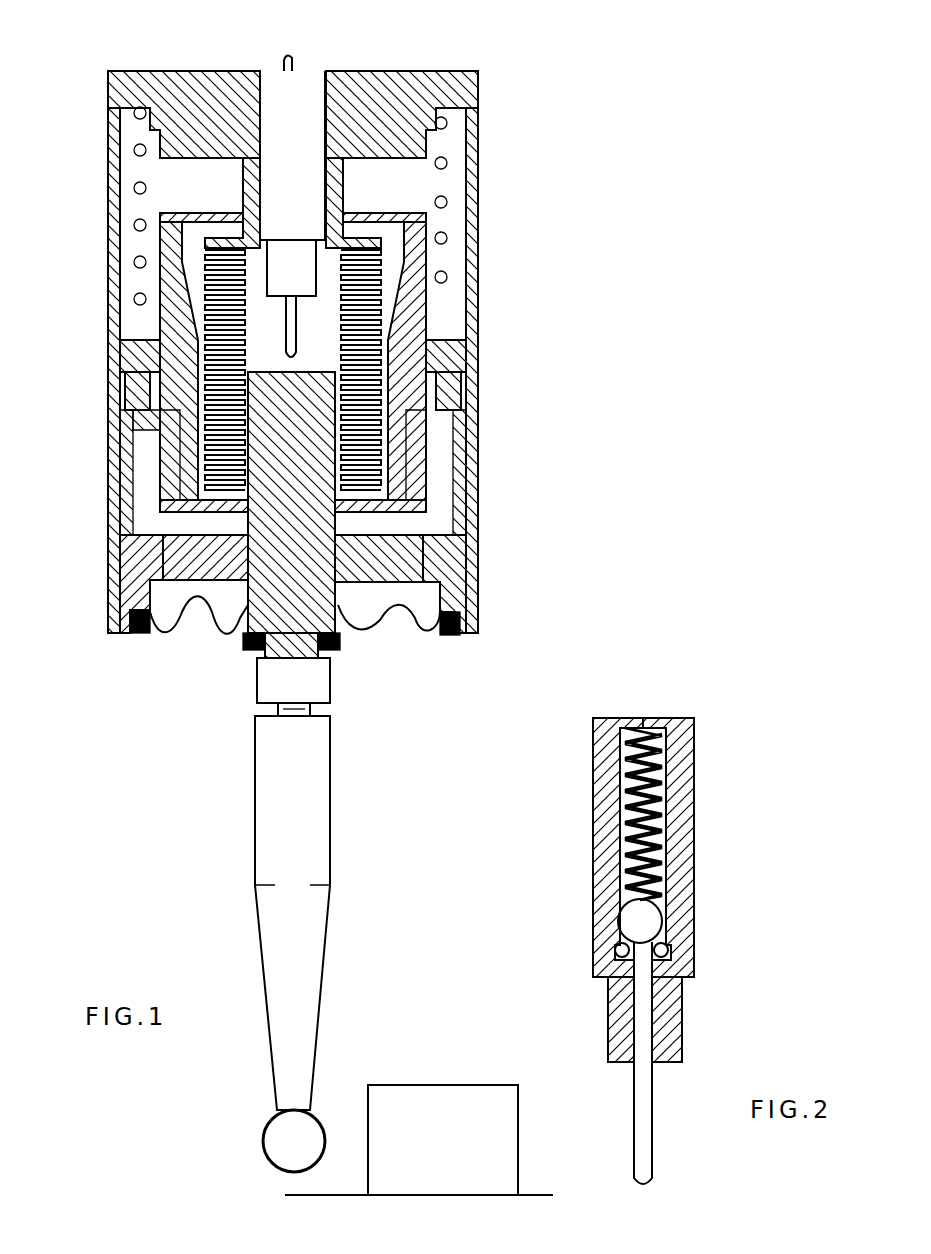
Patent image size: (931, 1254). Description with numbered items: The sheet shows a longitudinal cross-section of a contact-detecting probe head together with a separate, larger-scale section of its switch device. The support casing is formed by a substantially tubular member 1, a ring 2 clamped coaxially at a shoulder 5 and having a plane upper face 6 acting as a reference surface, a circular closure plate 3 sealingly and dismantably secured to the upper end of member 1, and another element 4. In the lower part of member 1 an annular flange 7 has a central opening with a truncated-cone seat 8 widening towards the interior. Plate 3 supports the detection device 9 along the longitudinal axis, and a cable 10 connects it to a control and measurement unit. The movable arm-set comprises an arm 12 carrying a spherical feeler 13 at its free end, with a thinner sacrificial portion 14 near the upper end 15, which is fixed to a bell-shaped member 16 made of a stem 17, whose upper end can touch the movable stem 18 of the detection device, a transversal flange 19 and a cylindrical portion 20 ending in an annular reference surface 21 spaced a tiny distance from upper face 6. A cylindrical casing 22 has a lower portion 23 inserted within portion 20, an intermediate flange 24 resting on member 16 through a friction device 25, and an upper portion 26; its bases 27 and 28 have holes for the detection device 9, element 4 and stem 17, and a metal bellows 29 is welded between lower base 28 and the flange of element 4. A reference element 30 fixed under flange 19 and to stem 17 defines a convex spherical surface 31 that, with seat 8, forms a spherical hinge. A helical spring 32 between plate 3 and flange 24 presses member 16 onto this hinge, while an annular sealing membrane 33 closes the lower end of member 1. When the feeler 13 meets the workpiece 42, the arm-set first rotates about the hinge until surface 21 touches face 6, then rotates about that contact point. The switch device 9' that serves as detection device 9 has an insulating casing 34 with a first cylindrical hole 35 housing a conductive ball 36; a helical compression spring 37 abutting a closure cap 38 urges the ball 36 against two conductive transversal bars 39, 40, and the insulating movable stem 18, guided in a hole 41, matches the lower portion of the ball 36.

In FIG. 1, the member 1 is at (112, 505).
In FIG. 1, the ring 2 is at (125, 395).
In FIG. 1, the closure plate 3 is at (145, 71).
In FIG. 1, the element 4 is at (243, 175).
In FIG. 1, the shoulder 5 is at (135, 420).
In FIG. 1, the upper face 6 is at (120, 352).
In FIG. 1, the flange 7 is at (165, 565).
In FIG. 1, the reference surface or seat 8 is at (145, 633).
In FIG. 1, the detection device 9 is at (295, 156).
In FIG. 2, the switch device 9' is at (593, 847).
In FIG. 1, the cable 10 is at (283, 62).
In FIG. 1, the arm 12 is at (258, 780).
In FIG. 1, the feeler 13 is at (272, 1136).
In FIG. 1, the sacrificial portion 14 is at (310, 706).
In FIG. 1, the upper end 15 is at (257, 690).
In FIG. 1, the member 16 is at (445, 488).
In FIG. 1, the stem 17 is at (338, 650).
In FIG. 1, the movable stem 18 is at (292, 345).
In FIG. 2, the movable stem 18 is at (655, 1103).
In FIG. 1, the base or transversal flange 19 is at (165, 530).
In FIG. 1, the cylindrical portion 20 is at (160, 455).
In FIG. 1, the annular reference surface 21 is at (462, 360).
In FIG. 1, the cylindrical casing 22 is at (150, 238).
In FIG. 1, the lower portion 23 is at (395, 428).
In FIG. 1, the intermediate flange 24 is at (410, 312).
In FIG. 1, the friction device 25 is at (180, 330).
In FIG. 1, the upper portion 26 is at (420, 218).
In FIG. 1, the base 27 is at (162, 215).
In FIG. 1, the lower base 28 is at (380, 508).
In FIG. 1, the metal bellows 29 is at (375, 268).
In FIG. 1, the reference element 30 is at (190, 625).
In FIG. 1, the external reference surface 31 is at (405, 600).
In FIG. 1, the helical spring 32 is at (448, 162).
In FIG. 1, the protection and sealing membrane 33 is at (247, 650).
In FIG. 2, the casing 34 is at (690, 845).
In FIG. 2, the first cylindrical hole 35 is at (665, 765).
In FIG. 2, the ball 36 is at (660, 915).
In FIG. 2, the helical compression spring 37 is at (655, 808).
In FIG. 2, the closure cap 38 is at (620, 718).
In FIG. 2, the transversal cylindrical bar 39 is at (614, 950).
In FIG. 2, the transversal cylindrical bar 40 is at (670, 950).
In FIG. 2, the hole 41 is at (665, 1015).
In FIG. 1, the workpiece 42 is at (458, 1095).